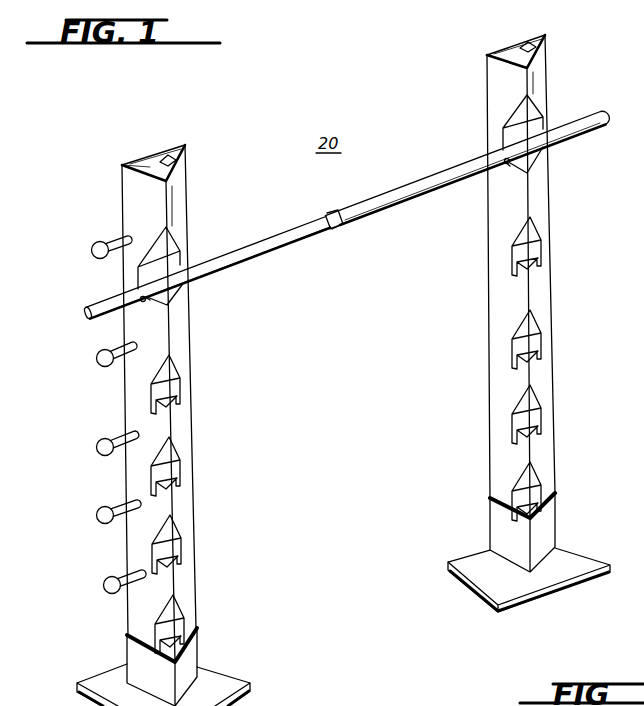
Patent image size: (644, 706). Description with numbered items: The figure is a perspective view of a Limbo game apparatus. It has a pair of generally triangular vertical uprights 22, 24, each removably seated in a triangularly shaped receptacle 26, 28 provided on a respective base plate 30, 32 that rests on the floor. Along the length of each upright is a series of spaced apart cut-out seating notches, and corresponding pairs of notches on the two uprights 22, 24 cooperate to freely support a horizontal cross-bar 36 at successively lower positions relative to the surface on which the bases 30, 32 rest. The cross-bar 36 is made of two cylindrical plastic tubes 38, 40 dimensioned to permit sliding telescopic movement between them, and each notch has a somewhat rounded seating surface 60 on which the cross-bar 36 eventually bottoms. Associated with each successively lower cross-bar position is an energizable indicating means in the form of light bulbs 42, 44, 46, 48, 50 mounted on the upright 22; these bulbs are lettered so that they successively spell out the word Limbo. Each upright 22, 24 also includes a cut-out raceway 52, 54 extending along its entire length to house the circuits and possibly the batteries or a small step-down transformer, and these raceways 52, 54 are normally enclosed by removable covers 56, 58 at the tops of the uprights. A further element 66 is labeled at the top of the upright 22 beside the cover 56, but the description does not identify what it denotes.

The vertical upright 22 is at (192, 192).
The vertical upright 24 is at (550, 82).
The triangularly shaped receptacle 26 is at (200, 636).
The triangularly shaped receptacle 28 is at (557, 512).
The base plate 30 is at (232, 672).
The base plate 32 is at (590, 556).
The horizontal cross-bar 36 is at (348, 236).
The cylindrical plastic tube 38 is at (278, 238).
The cylindrical plastic tube 40 is at (420, 181).
The light bulb 42 is at (91, 252).
The light bulb 44 is at (96, 360).
The light bulb 46 is at (96, 448).
The light bulb 48 is at (97, 518).
The light bulb 50 is at (104, 588).
The cut-out raceway 52 is at (168, 160).
The cut-out raceway 54 is at (541, 60).
The removable cover 56 is at (150, 164).
The removable cover 58 is at (533, 44).
The rounded seating surface 60 is at (147, 300).
The top face 66 is at (189, 164).